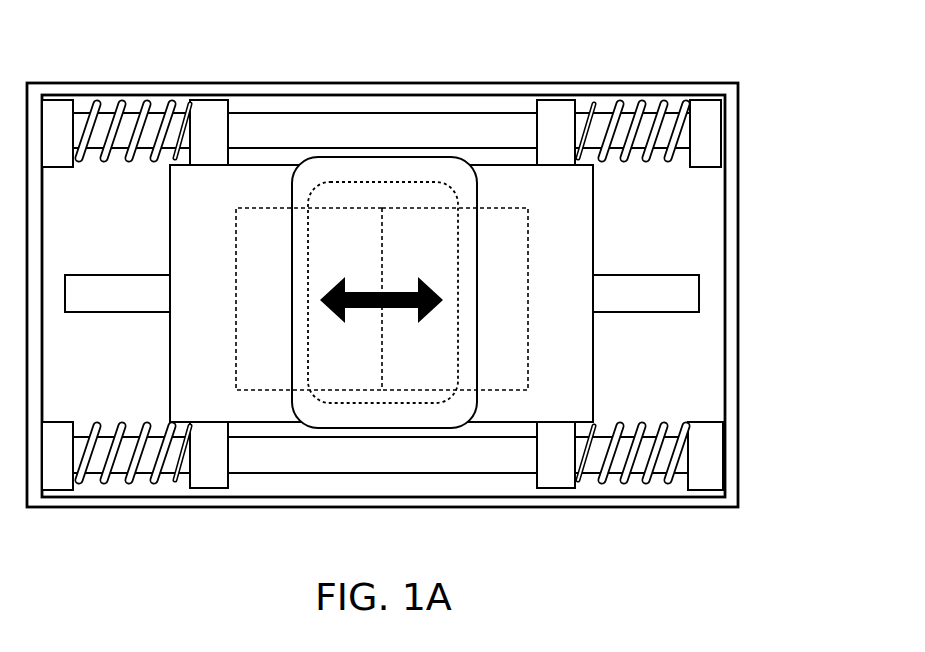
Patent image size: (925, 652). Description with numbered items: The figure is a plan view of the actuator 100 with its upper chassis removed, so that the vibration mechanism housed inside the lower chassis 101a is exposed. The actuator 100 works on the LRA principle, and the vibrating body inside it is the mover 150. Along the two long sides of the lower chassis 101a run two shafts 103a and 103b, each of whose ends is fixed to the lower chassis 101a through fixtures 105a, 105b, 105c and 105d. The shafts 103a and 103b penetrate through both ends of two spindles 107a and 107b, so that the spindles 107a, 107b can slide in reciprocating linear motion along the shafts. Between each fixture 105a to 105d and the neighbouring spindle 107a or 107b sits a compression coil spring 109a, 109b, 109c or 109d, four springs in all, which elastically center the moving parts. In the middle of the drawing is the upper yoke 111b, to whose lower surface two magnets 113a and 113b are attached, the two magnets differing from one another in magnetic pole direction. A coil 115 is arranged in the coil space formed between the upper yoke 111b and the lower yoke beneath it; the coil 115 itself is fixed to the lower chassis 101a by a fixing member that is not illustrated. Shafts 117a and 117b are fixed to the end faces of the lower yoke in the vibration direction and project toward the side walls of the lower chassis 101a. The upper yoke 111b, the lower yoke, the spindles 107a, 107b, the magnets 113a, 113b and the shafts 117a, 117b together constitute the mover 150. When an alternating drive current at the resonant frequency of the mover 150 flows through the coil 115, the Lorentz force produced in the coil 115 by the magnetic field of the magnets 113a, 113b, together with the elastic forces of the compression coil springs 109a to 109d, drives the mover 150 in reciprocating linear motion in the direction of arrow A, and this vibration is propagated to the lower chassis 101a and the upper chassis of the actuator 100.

The actuator 100 is at (748, 66).
The lower chassis 101a is at (392, 83).
The shaft 103a is at (255, 112).
The shaft 103b is at (255, 473).
The fixture 105a is at (62, 97).
The fixture 105b is at (715, 157).
The fixture 105c is at (58, 420).
The fixture 105d is at (720, 432).
The spindle 107a is at (200, 108).
The spindle 107b is at (548, 108).
The compression coil spring 109a is at (118, 97).
The compression coil spring 109b is at (622, 97).
The compression coil spring 109c is at (128, 485).
The compression coil spring 109d is at (617, 480).
The upper yoke 111b is at (593, 400).
The magnet 113a is at (235, 265).
The magnet 113b is at (527, 260).
The coil 115 is at (477, 327).
The shaft 117a is at (95, 275).
The shaft 117b is at (635, 275).
The mover 150 is at (602, 242).
The arrow A is at (365, 290).